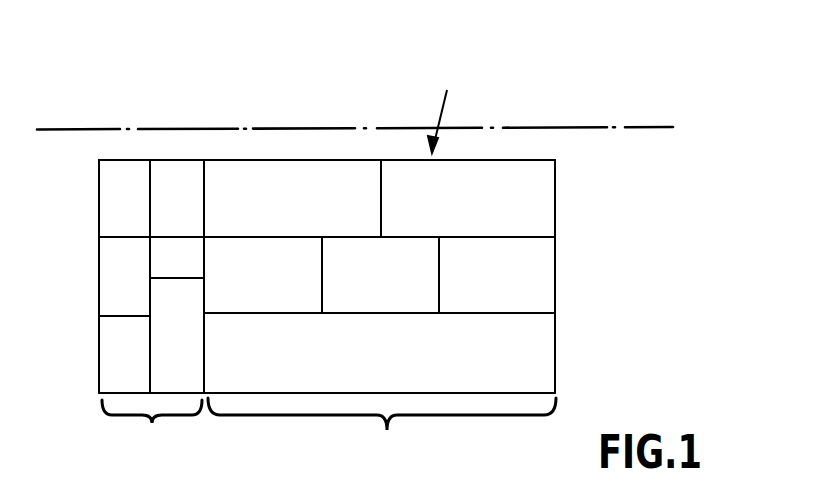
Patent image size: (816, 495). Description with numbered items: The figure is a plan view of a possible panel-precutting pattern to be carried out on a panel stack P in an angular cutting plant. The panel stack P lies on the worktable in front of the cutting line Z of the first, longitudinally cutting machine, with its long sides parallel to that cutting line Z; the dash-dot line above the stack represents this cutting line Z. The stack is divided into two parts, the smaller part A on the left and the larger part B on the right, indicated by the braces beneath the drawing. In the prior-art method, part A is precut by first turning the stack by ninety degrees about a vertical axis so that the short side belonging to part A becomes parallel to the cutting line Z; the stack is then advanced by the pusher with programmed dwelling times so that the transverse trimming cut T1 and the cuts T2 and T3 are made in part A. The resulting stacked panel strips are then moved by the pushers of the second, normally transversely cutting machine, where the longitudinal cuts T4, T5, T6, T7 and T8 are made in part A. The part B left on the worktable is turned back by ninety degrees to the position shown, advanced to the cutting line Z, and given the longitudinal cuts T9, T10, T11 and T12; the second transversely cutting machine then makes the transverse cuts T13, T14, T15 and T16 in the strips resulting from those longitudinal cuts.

The transverse trimming cut T1 is at (98, 207).
The cut T2 is at (152, 305).
The cut T3 is at (205, 293).
The longitudinal cut T4 is at (162, 160).
The longitudinal cut T5 is at (117, 238).
The longitudinal cut T6 is at (173, 275).
The longitudinal cut T7 is at (117, 317).
The longitudinal cut T8 is at (167, 392).
The longitudinal cut T9 is at (540, 158).
The longitudinal cut T10 is at (538, 235).
The longitudinal cut T11 is at (538, 310).
The longitudinal cut T12 is at (538, 390).
The transverse cut T13 is at (323, 288).
The transverse cut T14 is at (382, 202).
The transverse cut T15 is at (440, 287).
The transverse cut T16 is at (556, 265).
The panel stack P is at (444, 103).
The cutting line Z is at (537, 123).
The panel stack part A is at (152, 432).
The panel stack part B is at (382, 432).